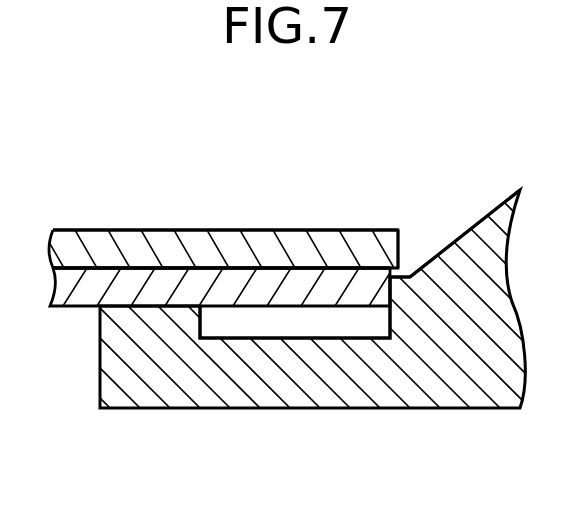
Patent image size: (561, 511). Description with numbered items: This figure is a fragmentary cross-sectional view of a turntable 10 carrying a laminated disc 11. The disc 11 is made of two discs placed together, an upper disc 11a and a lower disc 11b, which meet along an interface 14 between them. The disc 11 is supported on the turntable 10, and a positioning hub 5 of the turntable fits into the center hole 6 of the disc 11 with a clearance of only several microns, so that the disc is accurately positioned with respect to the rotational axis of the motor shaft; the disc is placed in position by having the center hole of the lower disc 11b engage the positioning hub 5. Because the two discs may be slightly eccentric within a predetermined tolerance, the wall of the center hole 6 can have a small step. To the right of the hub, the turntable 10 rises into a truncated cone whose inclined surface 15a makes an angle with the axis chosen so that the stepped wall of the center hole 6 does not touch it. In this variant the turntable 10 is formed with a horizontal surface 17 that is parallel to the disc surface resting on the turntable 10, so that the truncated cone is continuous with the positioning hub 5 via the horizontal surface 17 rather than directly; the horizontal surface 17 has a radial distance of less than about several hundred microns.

The positioning hub 5 is at (397, 322).
The center hole 6 is at (405, 245).
The turntable 10 is at (332, 398).
The disc 11 is at (210, 230).
The upper disc 11a is at (120, 230).
The lower disc 11b is at (83, 293).
The interface 14 is at (313, 265).
The inclined surface 15a is at (462, 232).
The horizontal surface 17 is at (410, 275).